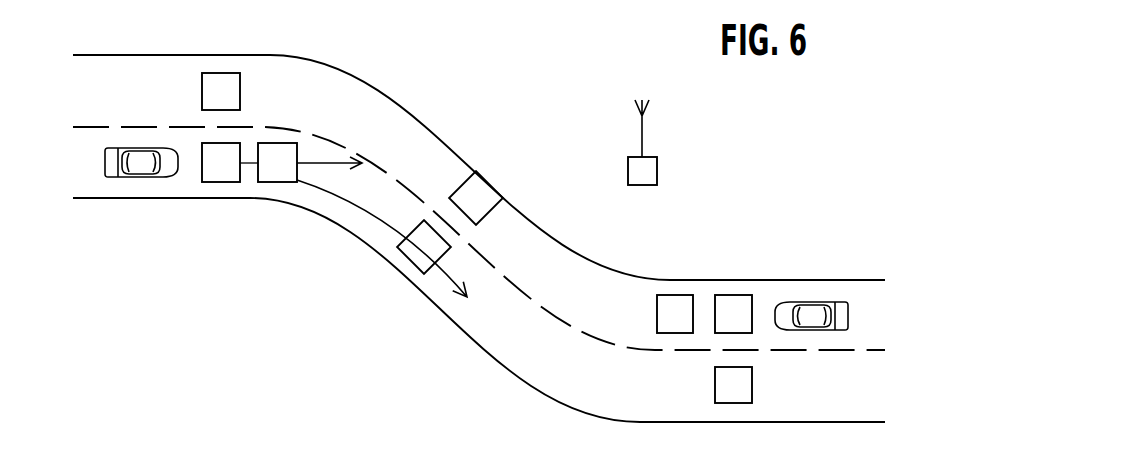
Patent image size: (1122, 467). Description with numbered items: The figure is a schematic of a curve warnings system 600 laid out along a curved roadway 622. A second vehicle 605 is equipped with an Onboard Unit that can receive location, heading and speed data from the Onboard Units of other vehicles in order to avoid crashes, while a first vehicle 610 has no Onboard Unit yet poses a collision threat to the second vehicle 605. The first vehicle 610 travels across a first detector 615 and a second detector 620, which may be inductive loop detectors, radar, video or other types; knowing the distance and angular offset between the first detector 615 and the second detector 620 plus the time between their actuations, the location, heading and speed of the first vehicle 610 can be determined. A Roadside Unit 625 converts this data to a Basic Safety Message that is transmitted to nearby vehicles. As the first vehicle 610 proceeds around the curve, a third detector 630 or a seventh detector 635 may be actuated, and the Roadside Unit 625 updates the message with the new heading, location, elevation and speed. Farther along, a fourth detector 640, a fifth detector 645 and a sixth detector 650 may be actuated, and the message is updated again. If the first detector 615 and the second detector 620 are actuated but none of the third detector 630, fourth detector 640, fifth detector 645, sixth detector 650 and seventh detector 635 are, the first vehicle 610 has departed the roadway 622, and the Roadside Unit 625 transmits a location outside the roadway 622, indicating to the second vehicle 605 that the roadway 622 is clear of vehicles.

The curve warnings system 600 is at (512, 77).
The vehicle V2 605 is at (807, 302).
The vehicle V1 610 is at (141, 178).
The detector D1 615 is at (219, 182).
The detector D2 620 is at (279, 182).
The roadway 622 is at (138, 72).
The Roadside Unit (RSU) 625 is at (657, 168).
The detector D3 630 is at (410, 261).
The detector D7 635 is at (490, 184).
The detector D4 640 is at (753, 384).
The detector D5 645 is at (734, 295).
The detector D6 650 is at (677, 295).